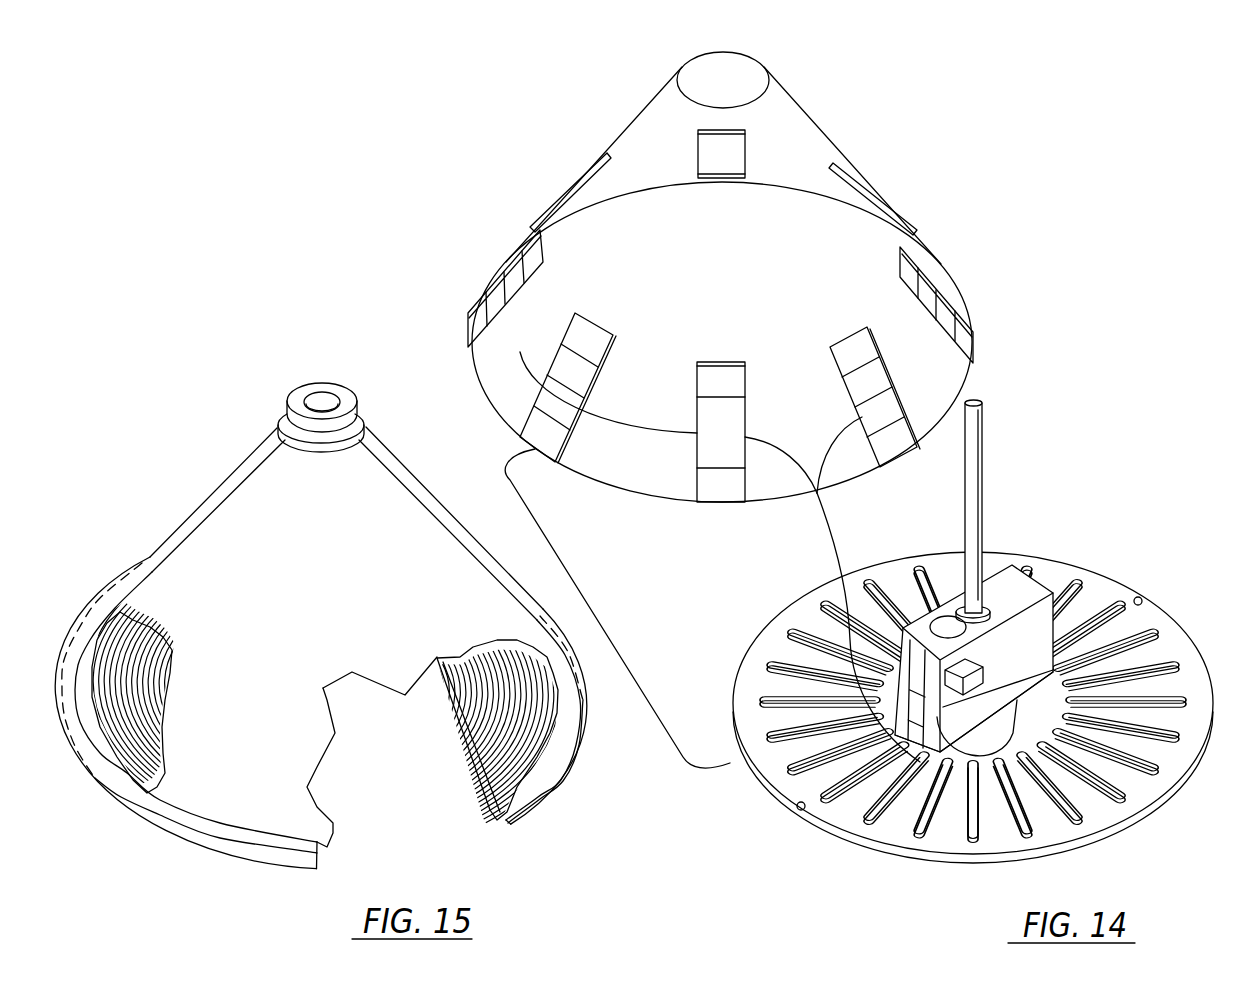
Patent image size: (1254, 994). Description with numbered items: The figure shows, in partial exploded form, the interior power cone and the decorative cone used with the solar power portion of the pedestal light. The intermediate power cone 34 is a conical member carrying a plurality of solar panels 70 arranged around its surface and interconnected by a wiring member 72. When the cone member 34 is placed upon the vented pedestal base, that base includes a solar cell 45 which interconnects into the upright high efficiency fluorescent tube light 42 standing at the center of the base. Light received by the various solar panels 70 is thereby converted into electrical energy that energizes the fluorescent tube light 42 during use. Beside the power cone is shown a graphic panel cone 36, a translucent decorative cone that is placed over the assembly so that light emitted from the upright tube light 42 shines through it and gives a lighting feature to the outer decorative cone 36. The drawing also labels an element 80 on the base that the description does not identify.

In FIG. 14, the intermediate power cone 34 is at (808, 152).
In FIG. 15, the graphic panel cone 36 is at (187, 522).
In FIG. 14, the upright high efficiency fluorescent tube light 42 is at (982, 478).
In FIG. 14, the solar cell 45 is at (973, 712).
In FIG. 14, the solar panels 70 is at (503, 290).
In FIG. 14, the wiring member 72 is at (522, 353).
In FIG. 14, the radial rib 80 is at (1010, 807).